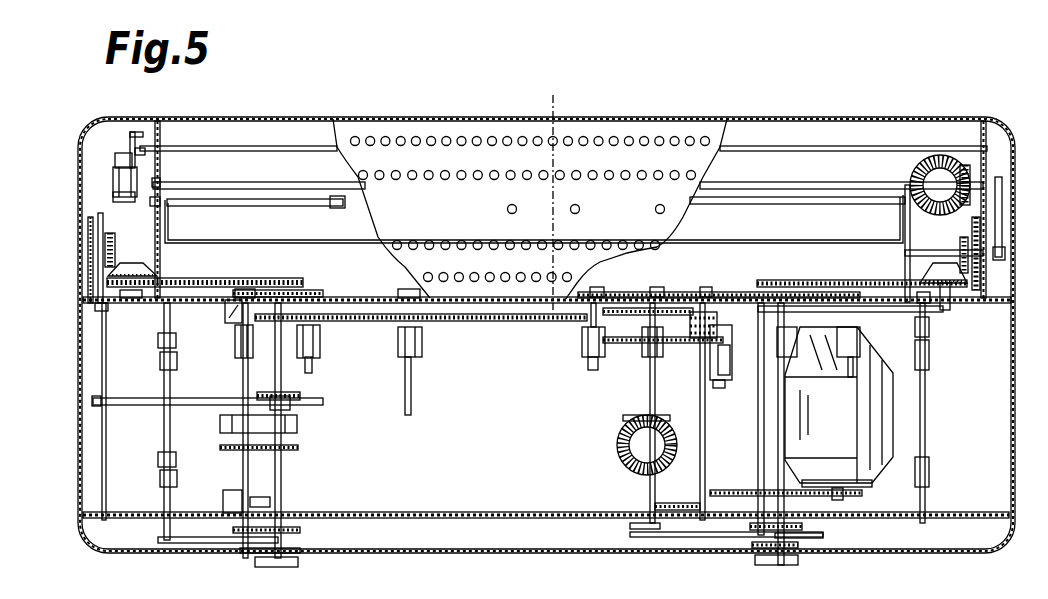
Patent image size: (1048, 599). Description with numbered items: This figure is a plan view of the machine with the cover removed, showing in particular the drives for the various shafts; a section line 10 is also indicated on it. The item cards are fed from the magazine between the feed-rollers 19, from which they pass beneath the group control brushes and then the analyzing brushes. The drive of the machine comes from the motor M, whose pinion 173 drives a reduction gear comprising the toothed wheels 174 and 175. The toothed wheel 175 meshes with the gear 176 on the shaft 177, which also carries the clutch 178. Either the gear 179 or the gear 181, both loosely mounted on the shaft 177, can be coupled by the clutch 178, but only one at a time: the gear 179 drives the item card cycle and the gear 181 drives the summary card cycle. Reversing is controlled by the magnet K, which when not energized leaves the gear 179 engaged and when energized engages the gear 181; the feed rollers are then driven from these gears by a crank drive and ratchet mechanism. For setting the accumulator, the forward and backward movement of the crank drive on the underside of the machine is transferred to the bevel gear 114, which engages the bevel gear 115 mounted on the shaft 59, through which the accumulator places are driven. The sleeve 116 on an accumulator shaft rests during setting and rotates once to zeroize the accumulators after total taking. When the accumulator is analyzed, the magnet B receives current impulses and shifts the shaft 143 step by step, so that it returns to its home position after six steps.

The shaft 143 is at (178, 150).
The shaft 59 is at (242, 184).
The sleeve 116 is at (293, 202).
The magnet B is at (110, 181).
The section line 10 is at (576, 105).
The bevel gear 114 is at (930, 157).
The bevel gear 115 is at (967, 162).
The clutch 178 is at (733, 293).
The gear 181 is at (687, 291).
The feed-rollers 19 is at (653, 346).
The gear 179 is at (697, 348).
The magnet K is at (733, 368).
The motor M is at (867, 448).
The shaft 177 is at (702, 462).
The gear 176 is at (655, 503).
The pinion 173 is at (860, 497).
The toothed wheel 174 is at (795, 496).
The toothed wheel 175 is at (743, 507).